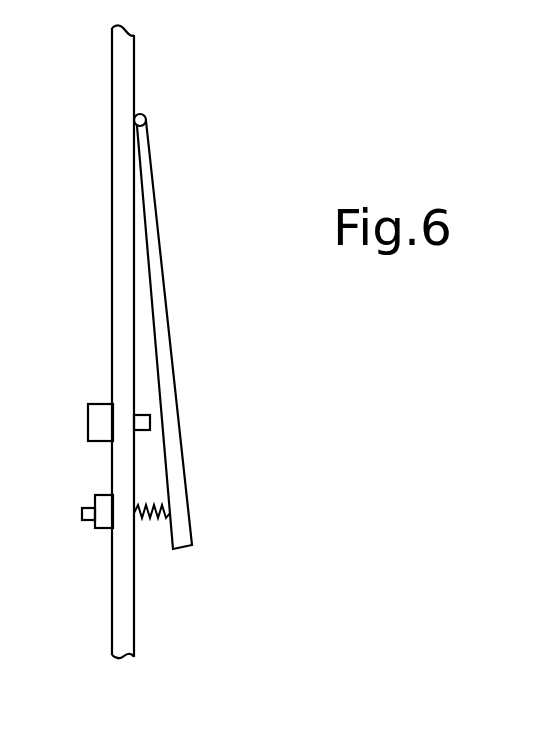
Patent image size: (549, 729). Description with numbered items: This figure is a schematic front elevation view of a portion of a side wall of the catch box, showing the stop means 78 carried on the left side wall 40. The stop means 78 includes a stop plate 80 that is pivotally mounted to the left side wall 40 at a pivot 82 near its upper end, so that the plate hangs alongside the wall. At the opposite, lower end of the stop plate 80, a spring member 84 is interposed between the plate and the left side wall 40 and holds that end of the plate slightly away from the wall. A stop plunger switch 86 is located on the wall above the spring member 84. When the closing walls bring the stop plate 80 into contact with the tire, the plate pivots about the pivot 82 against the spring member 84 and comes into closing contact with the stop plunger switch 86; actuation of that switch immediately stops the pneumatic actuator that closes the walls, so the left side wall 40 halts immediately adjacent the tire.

The left side wall 40 is at (112, 118).
The stop means 78 is at (210, 420).
The stop plate 80 is at (174, 345).
The pivot 82 is at (141, 114).
The spring member 84 is at (163, 518).
The stop plunger switch 86 is at (88, 422).